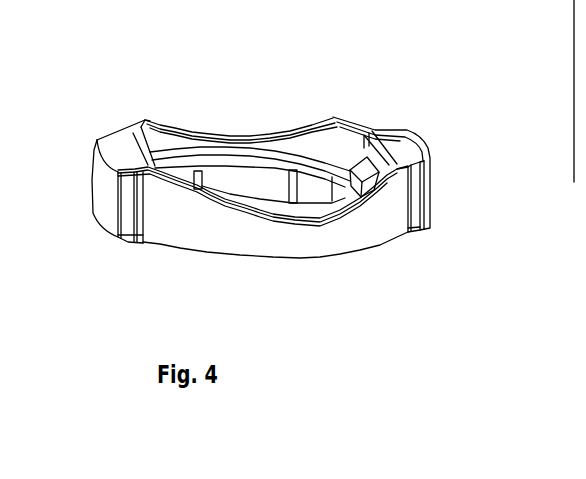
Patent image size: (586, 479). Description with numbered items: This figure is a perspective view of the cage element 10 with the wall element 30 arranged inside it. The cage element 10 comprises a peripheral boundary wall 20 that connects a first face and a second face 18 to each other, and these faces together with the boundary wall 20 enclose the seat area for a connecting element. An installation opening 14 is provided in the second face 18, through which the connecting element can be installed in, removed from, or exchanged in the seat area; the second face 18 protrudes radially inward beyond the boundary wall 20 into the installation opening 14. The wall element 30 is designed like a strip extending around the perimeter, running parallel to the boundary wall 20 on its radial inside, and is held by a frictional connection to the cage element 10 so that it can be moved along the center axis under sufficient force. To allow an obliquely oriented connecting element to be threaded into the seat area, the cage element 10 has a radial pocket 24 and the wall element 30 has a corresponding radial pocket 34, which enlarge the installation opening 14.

The cage element 10 is at (343, 128).
The installation opening 14 is at (313, 140).
The second face 18 is at (117, 150).
The peripheral boundary wall 20 is at (355, 222).
The radial pocket 24 is at (108, 185).
The wall element 30 is at (253, 185).
The radial pocket 34 is at (360, 170).